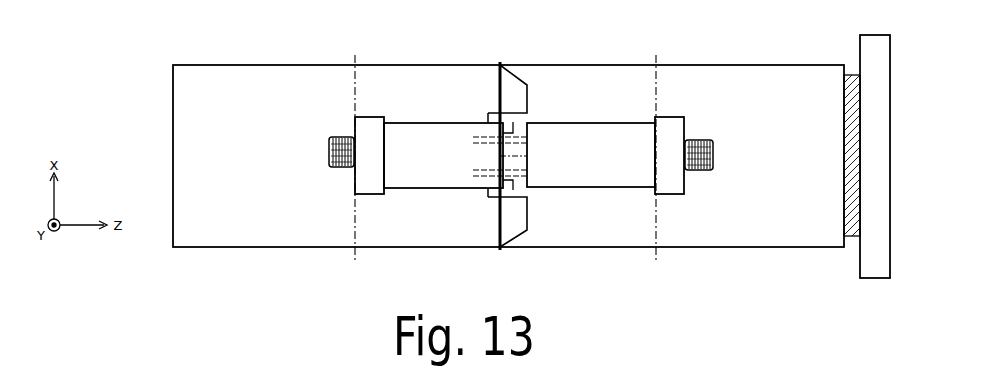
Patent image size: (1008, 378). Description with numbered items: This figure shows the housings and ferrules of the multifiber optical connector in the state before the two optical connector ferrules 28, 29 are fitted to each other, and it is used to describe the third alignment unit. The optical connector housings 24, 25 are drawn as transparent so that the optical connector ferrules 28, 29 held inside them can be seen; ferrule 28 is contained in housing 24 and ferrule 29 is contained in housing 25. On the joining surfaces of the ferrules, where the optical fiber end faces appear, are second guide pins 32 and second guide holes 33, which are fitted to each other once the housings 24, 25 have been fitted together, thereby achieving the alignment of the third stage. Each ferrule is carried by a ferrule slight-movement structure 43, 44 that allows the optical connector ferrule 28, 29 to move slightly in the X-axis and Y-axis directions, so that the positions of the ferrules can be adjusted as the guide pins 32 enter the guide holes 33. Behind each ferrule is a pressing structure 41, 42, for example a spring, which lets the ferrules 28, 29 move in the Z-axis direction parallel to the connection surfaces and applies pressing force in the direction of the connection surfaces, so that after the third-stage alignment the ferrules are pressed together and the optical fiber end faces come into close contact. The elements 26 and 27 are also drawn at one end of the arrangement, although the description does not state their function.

The optical connector housing 24 is at (683, 65).
The optical connector housing 25 is at (272, 64).
The mounting plate 26 is at (877, 35).
The spacer pad 27 is at (852, 73).
The optical connector ferrule 28 is at (605, 123).
The optical connector ferrule 29 is at (415, 123).
The second guide pin 32 is at (513, 137).
The second guide hole 33 is at (473, 139).
The pressing structure 41 is at (699, 140).
The pressing structure 42 is at (348, 136).
The ferrule slight-movement structure 43 is at (668, 117).
The ferrule slight-movement structure 44 is at (368, 117).